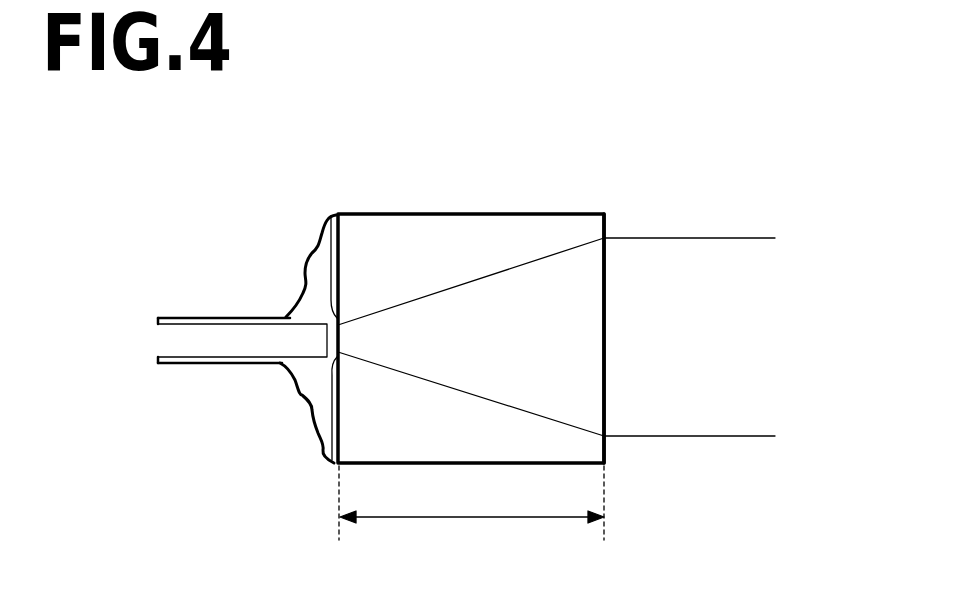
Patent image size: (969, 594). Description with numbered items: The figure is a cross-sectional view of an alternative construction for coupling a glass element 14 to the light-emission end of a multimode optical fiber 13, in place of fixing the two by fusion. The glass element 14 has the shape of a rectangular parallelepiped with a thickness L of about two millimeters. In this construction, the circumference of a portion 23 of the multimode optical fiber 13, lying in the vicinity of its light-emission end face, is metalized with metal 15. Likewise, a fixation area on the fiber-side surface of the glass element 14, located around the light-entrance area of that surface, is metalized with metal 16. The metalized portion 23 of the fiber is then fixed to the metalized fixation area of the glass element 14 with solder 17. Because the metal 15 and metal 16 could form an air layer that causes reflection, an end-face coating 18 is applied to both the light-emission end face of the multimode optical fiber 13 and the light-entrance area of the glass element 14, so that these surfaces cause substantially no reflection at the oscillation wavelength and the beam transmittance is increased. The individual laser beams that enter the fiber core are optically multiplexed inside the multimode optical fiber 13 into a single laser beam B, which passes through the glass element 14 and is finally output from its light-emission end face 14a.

The multimode optical fiber 13 is at (181, 342).
The glass element 14 is at (483, 213).
The light-emission end face 14a is at (606, 217).
The metal 15 is at (160, 323).
The metal 16 is at (332, 213).
The solder 17 is at (322, 265).
The end-face coating 18 is at (333, 373).
The portion of the multimode optical fiber 23 is at (221, 318).
The laser beam B is at (668, 262).
The thickness L is at (471, 511).